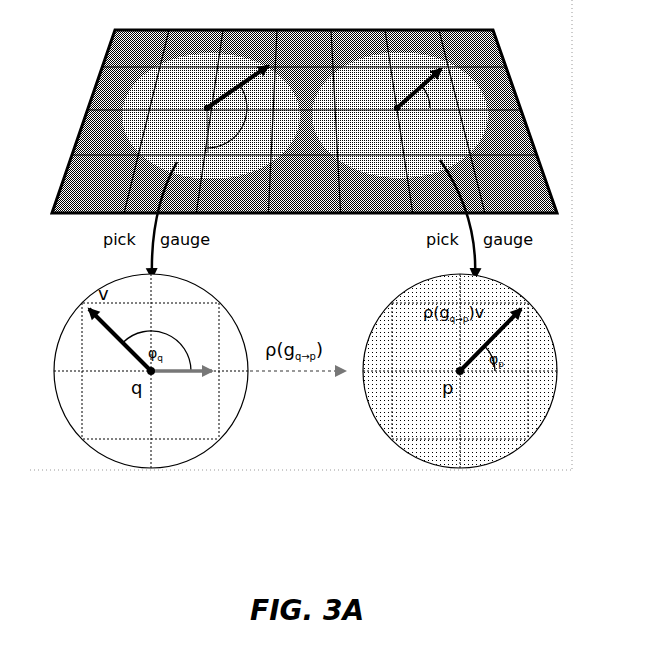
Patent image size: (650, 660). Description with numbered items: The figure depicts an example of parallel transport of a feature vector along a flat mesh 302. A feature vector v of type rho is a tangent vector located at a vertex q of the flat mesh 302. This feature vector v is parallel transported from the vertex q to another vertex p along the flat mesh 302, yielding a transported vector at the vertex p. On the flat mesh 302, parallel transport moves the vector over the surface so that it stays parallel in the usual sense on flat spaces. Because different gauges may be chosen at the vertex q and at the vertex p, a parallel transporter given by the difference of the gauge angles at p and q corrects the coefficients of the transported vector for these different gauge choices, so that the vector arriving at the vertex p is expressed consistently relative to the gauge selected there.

The flat mesh 302 is at (152, 45).
The vertex q is at (218, 120).
The vertex p is at (410, 89).
The feature vector v is at (238, 72).